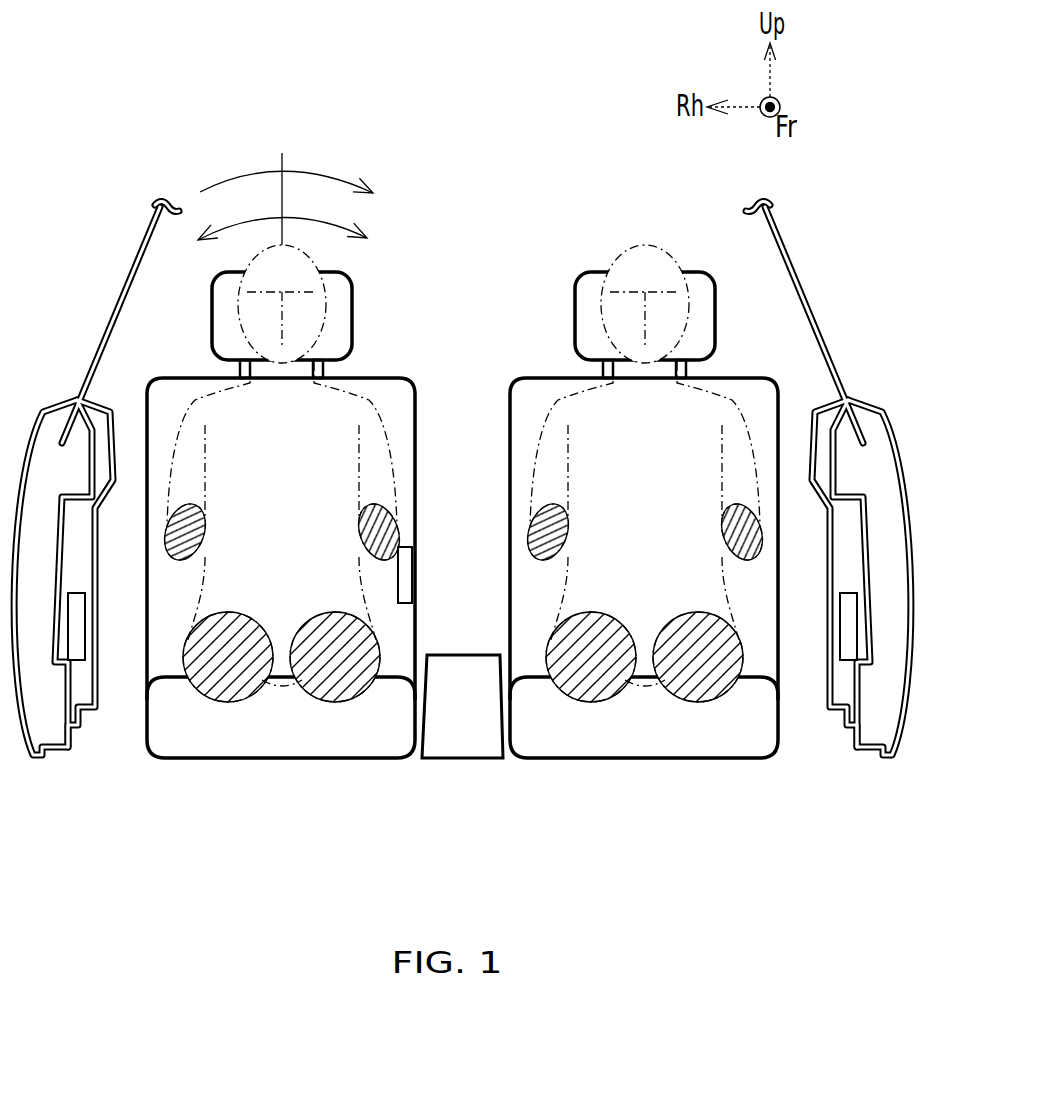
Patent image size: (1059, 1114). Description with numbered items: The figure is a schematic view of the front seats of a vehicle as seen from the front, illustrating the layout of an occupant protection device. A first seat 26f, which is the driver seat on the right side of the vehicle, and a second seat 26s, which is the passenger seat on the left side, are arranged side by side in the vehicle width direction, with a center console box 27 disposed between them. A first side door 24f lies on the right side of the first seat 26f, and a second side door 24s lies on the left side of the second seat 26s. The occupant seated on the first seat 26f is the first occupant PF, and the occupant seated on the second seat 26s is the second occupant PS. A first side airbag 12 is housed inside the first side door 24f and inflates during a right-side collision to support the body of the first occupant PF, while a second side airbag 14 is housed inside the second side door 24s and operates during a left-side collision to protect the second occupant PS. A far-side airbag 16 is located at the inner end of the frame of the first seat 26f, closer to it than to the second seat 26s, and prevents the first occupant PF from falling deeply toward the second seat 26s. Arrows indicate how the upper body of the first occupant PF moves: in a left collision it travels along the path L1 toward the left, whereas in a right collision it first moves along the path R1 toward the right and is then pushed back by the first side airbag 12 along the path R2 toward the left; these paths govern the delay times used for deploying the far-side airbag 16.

The first side airbag 12 is at (93, 632).
The second side airbag 14 is at (835, 632).
The far-side airbag 16 is at (414, 565).
The first side door 24f is at (38, 430).
The second side door 24s is at (893, 432).
The first seat 26f is at (383, 380).
The second seat 26s is at (543, 377).
The center console box 27 is at (477, 760).
The first occupant PF is at (240, 261).
The second occupant PS is at (648, 243).
The path R1 is at (270, 239).
The path R2 is at (302, 199).
The path L1 is at (370, 242).